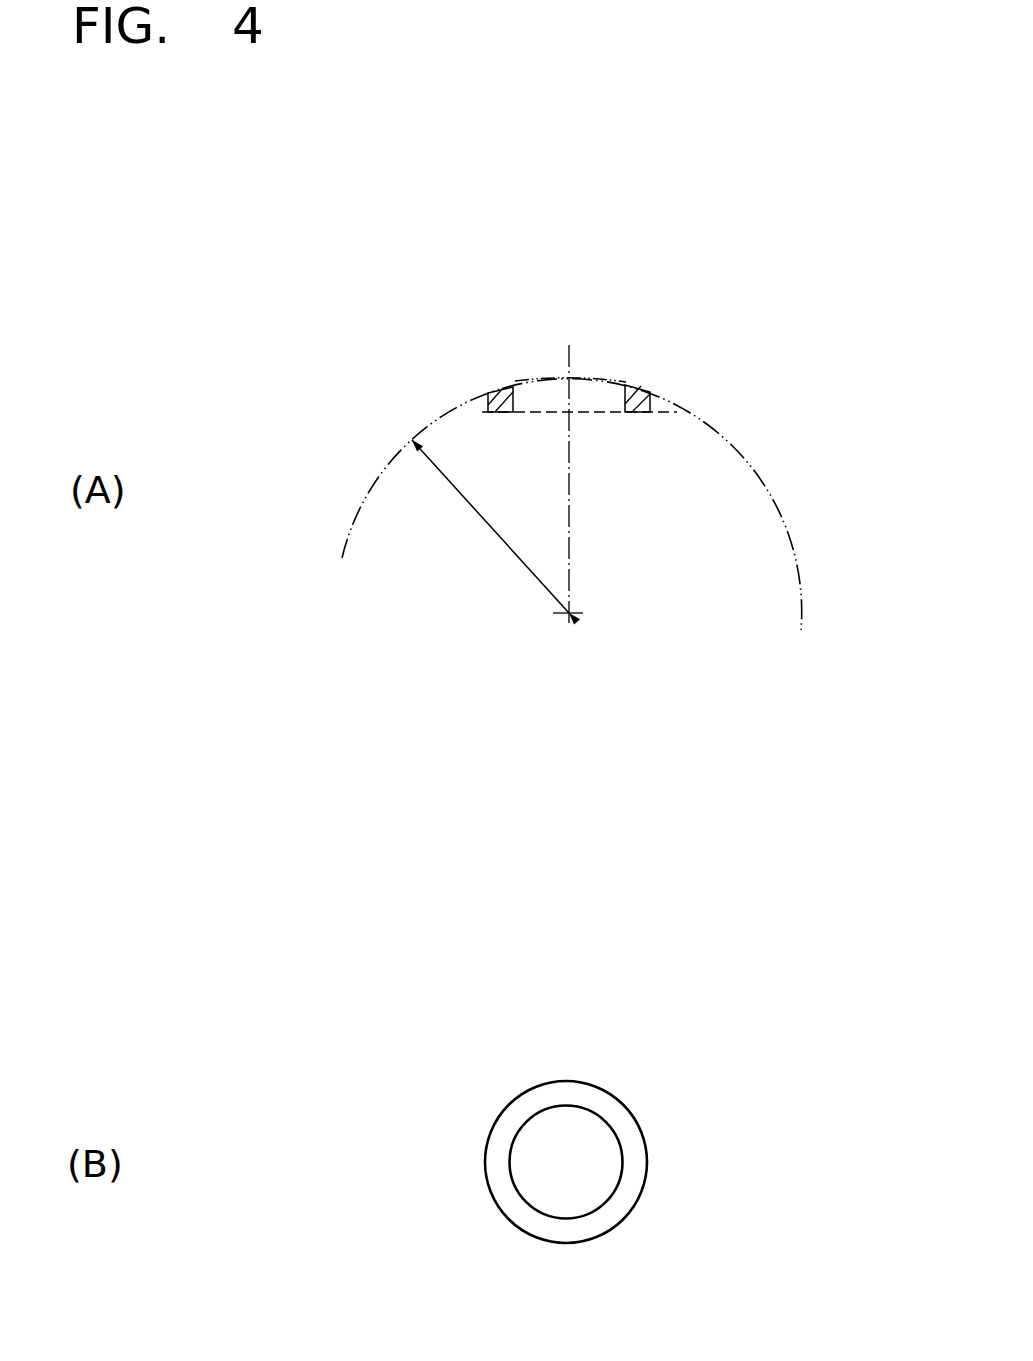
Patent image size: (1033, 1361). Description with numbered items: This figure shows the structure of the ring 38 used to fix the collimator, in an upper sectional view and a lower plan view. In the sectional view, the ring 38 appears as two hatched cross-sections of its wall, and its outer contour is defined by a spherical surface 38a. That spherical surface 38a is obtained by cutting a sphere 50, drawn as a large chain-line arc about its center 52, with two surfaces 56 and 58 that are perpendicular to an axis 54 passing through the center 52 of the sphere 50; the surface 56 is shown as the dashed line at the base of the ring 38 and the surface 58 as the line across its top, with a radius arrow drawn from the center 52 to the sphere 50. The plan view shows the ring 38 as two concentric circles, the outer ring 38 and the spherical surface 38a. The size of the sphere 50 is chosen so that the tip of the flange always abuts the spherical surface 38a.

The ring 38 is at (650, 382).
The spherical surface 38a is at (635, 388).
The sphere 50 is at (801, 597).
The center 52 is at (575, 619).
The axis 54 is at (571, 557).
The perpendicular surface 56 is at (677, 423).
The perpendicular surface 58 is at (595, 398).